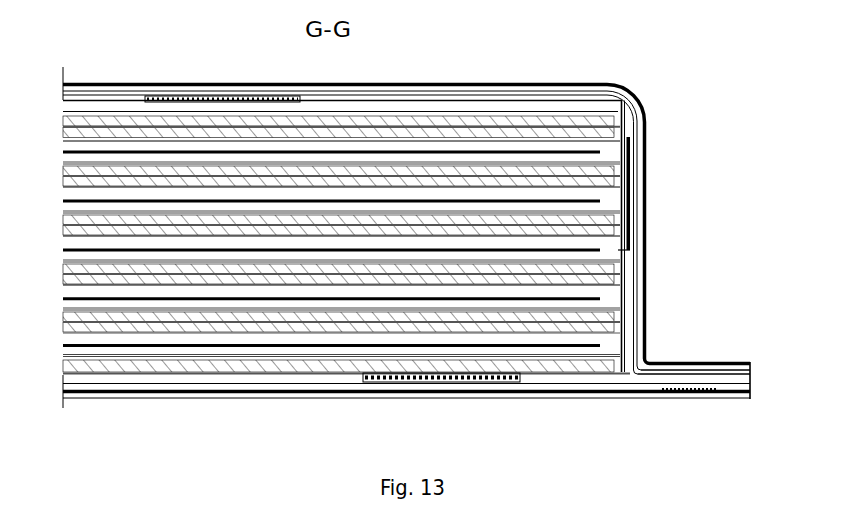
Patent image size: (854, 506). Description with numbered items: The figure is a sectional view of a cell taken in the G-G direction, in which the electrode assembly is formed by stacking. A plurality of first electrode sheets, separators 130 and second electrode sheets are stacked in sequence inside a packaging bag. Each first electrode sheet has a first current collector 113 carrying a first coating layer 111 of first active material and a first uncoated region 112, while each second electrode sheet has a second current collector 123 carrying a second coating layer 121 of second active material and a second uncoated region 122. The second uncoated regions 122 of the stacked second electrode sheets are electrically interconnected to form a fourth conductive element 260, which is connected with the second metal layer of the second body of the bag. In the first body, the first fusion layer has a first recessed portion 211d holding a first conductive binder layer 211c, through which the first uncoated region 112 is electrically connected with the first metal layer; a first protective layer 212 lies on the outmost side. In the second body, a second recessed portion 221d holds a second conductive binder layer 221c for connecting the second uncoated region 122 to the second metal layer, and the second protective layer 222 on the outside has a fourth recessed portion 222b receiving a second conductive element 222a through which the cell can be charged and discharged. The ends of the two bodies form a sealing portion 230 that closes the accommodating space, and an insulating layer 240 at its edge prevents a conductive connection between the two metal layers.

The first protective layer 212 is at (405, 84).
The first conductive binder layer 211c is at (150, 97).
The first recessed portion 211d is at (183, 97).
The first uncoated region 112 is at (88, 100).
The first coating layer 111 is at (88, 112).
The first current collector 113 is at (88, 152).
The separator 130 is at (88, 163).
The second coating layer 121 is at (88, 170).
The second current collector 123 is at (88, 200).
The second uncoated region 122 is at (88, 375).
The fourth conductive element 260 is at (630, 193).
The sealing portion 230 is at (709, 380).
The insulating layer 240 is at (752, 378).
The second protective layer 222 is at (320, 393).
The second conductive element 222a is at (705, 391).
The fourth recessed portion 222b is at (683, 394).
The second conductive binder layer 221c is at (437, 383).
The second recessed portion 221d is at (447, 383).